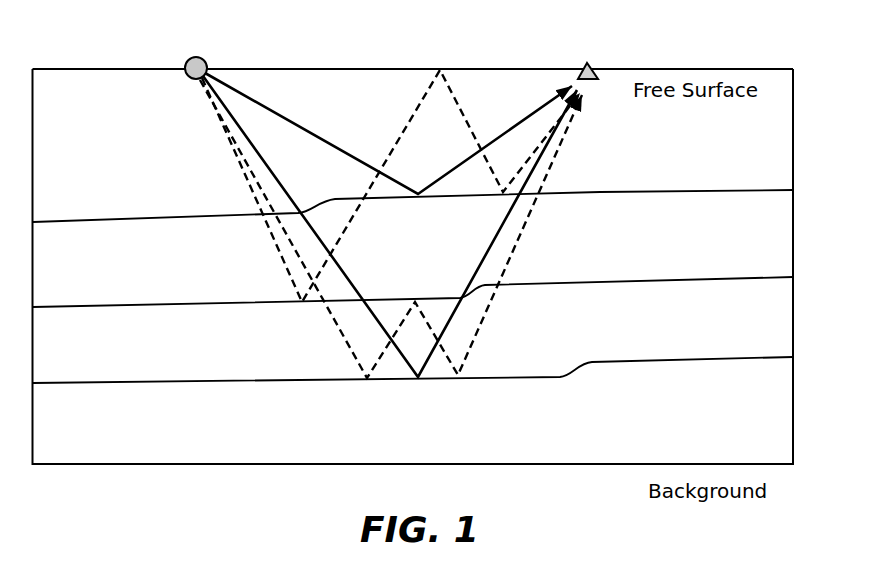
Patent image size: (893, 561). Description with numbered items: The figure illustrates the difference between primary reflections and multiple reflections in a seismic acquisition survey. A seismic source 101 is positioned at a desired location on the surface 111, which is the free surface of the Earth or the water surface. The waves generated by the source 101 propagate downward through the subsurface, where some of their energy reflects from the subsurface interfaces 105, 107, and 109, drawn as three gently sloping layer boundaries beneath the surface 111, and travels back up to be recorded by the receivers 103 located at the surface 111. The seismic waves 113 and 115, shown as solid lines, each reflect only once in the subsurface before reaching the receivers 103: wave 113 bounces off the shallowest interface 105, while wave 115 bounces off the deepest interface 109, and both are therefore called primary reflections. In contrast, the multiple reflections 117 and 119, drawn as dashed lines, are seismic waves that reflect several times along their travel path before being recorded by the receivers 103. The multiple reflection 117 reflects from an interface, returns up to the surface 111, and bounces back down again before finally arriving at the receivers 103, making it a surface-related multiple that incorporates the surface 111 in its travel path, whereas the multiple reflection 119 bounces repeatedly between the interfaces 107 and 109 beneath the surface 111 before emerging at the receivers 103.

The source 101 is at (188, 60).
The receivers 103 is at (590, 62).
The subsurface interface 105 is at (772, 190).
The subsurface interface 107 is at (772, 277).
The subsurface interface 109 is at (772, 357).
The surface 111 is at (318, 68).
The primary reflection 113 is at (297, 124).
The primary reflection 115 is at (343, 270).
The multiple reflection 117 is at (271, 232).
The multiple reflection 119 is at (347, 343).